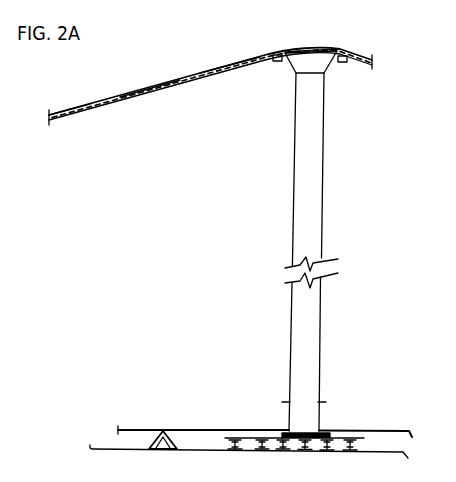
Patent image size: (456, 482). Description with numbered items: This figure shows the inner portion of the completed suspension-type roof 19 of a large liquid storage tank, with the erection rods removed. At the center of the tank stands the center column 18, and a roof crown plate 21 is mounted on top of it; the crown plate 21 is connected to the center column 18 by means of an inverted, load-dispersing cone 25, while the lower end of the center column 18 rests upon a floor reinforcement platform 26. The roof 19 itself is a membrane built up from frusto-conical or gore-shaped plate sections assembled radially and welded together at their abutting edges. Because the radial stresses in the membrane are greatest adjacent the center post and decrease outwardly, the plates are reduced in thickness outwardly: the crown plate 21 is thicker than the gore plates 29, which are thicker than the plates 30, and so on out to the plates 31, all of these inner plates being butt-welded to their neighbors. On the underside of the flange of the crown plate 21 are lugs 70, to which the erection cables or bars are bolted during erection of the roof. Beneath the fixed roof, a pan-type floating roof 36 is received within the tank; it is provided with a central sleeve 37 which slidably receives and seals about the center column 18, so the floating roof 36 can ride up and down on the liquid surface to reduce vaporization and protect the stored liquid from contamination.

The center column 18 is at (292, 238).
The suspension-type roof 19 is at (172, 77).
The roof crown plate 21 is at (309, 27).
The inverted load-dispersing cone 25 is at (291, 60).
The floor reinforcement platform 26 is at (243, 438).
The gore plates 29 is at (218, 69).
The roof plates 30 is at (150, 68).
The roof plates 31 is at (72, 112).
The floating roof 36 is at (130, 429).
The central sleeve 37 is at (283, 418).
The lugs 70 is at (278, 55).